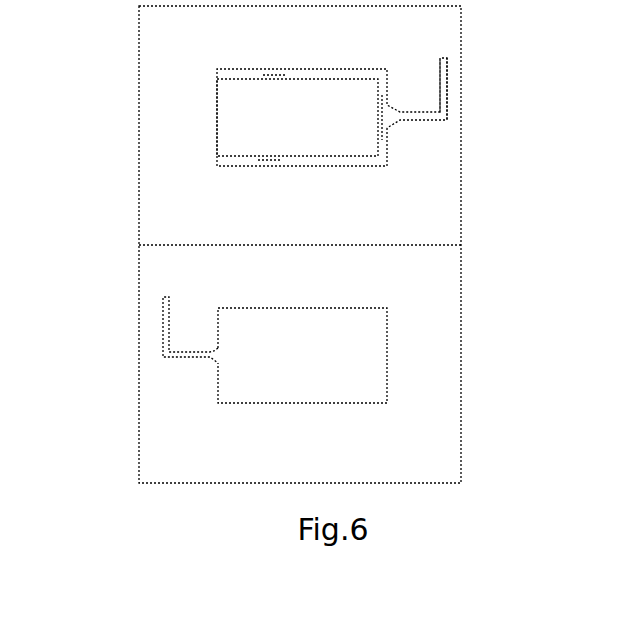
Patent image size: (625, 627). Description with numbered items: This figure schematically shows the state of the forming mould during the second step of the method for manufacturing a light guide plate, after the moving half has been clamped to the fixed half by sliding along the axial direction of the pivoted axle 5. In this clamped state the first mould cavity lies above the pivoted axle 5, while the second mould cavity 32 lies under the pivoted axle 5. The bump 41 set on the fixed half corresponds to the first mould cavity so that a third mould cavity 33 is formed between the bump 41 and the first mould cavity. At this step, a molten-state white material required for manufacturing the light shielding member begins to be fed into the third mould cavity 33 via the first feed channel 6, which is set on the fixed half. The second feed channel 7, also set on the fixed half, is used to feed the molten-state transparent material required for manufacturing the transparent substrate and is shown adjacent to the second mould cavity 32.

The pivoted axle 5 is at (338, 244).
The bump 41 is at (213, 134).
The third mould cavity 33 is at (373, 135).
The first feed channel 6 is at (480, 92).
The second mould cavity 32 is at (378, 377).
The second feed channel 7 is at (130, 343).